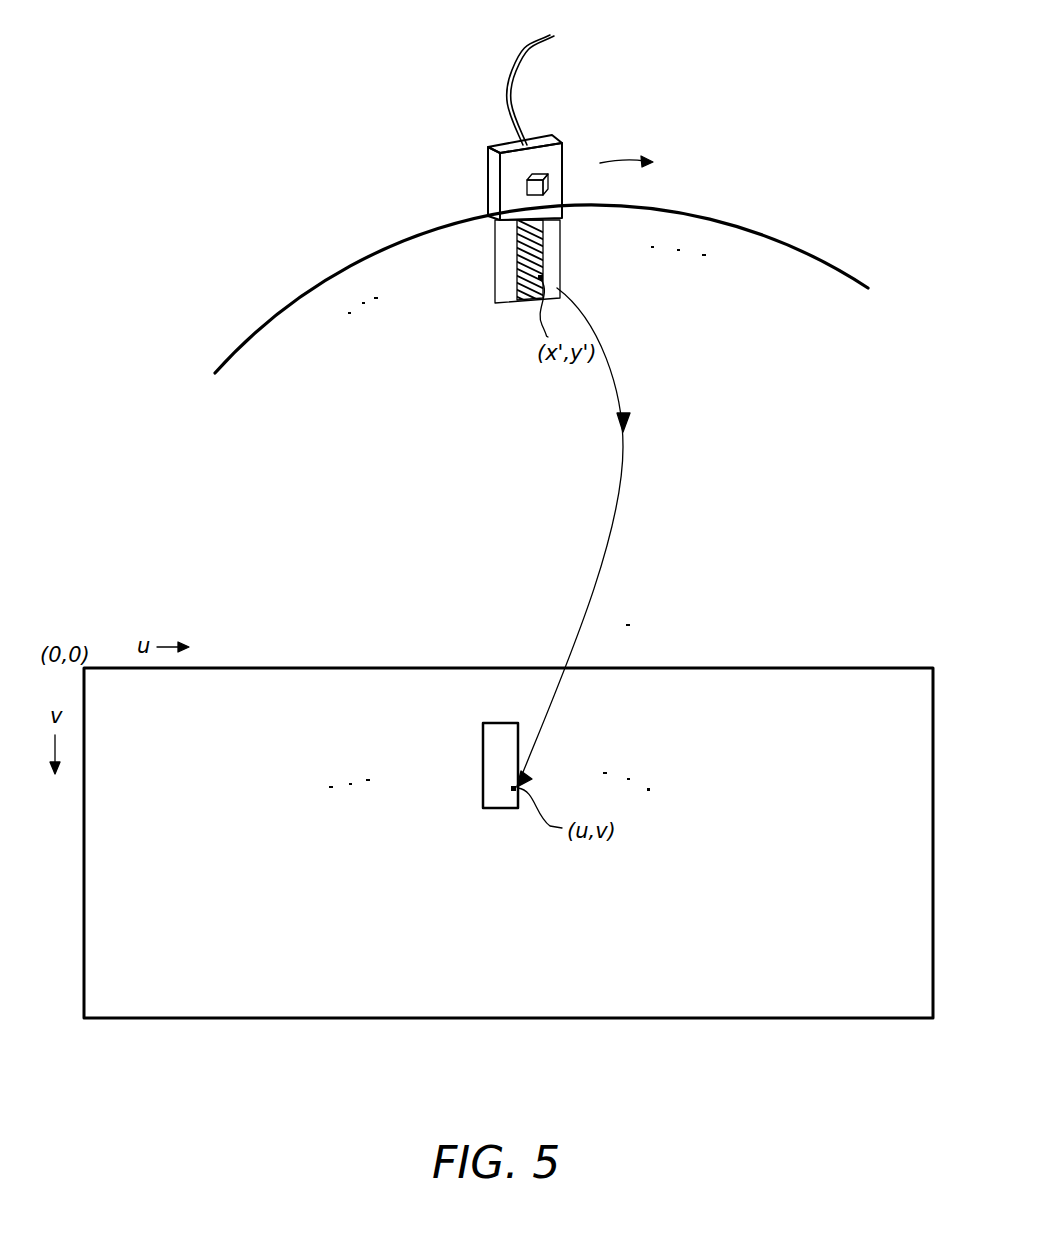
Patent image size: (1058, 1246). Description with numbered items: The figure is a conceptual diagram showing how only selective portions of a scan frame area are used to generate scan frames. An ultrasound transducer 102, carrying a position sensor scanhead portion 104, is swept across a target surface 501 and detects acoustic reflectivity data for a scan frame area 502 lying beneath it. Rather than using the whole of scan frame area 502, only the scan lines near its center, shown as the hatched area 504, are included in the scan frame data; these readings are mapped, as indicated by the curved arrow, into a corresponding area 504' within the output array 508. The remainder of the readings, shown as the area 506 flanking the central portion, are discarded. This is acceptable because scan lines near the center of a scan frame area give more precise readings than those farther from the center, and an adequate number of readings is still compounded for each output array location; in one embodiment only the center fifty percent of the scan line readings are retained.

The ultrasound transducer 102 is at (488, 147).
The position sensor scanhead portion 104 is at (527, 176).
The target surface 501 is at (730, 212).
The scan frame area 502 is at (562, 268).
The area 504 is at (494, 264).
The area 506 is at (503, 278).
The image 508 is at (327, 668).
The corresponding area 504' is at (510, 702).